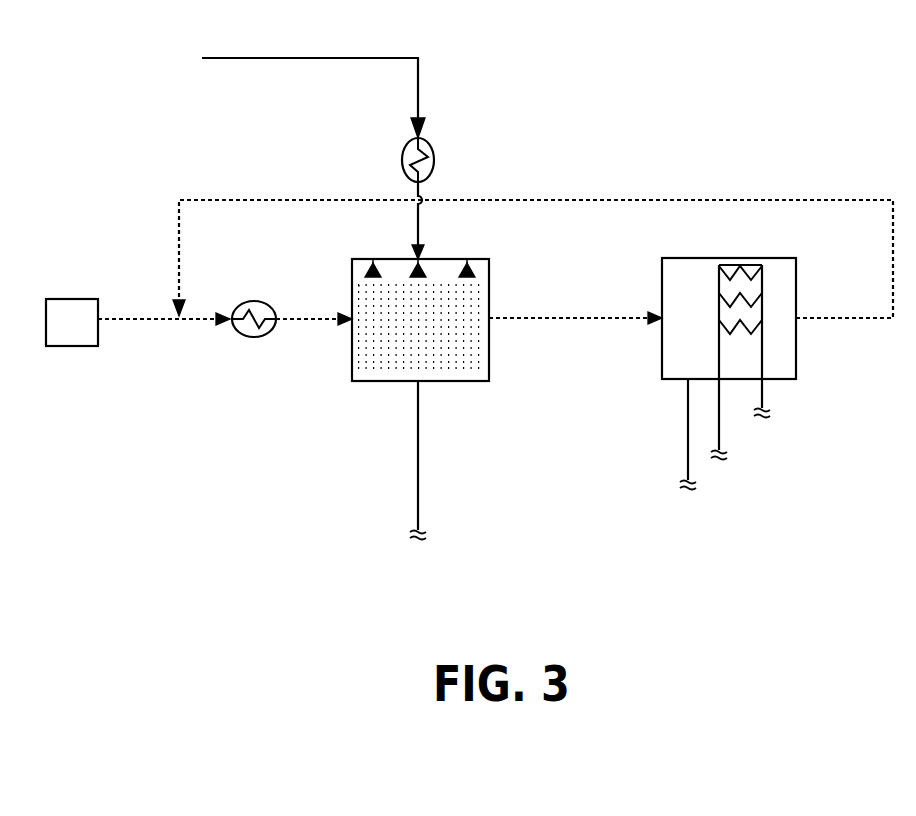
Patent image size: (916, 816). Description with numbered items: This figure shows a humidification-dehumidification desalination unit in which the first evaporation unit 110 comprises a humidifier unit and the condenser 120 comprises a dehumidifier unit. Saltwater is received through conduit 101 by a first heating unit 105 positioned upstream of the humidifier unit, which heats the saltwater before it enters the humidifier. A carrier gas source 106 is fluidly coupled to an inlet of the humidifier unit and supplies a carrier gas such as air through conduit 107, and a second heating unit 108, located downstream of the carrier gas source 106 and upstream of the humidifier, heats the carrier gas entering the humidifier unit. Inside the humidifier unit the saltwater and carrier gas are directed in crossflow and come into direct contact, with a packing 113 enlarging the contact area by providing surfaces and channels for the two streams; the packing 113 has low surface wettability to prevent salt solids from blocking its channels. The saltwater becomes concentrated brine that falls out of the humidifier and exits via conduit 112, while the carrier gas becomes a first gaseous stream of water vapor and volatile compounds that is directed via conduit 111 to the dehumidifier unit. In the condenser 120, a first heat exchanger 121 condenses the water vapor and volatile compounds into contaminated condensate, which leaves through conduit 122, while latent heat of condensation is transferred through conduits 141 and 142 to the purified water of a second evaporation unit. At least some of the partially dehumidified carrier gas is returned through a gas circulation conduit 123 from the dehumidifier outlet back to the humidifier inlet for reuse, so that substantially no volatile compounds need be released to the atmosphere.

The conduit 101 is at (284, 58).
The first heating unit 105 is at (403, 148).
The carrier gas source 106 is at (72, 322).
The conduit 107 is at (135, 320).
The second heating unit 108 is at (256, 338).
The first evaporation unit 110 is at (352, 259).
The packing 113 is at (421, 326).
The conduit 111 is at (558, 320).
The condenser 120 is at (662, 258).
The first heat exchanger 121 is at (759, 364).
The conduit 122 is at (688, 431).
The conduit 141 is at (719, 433).
The conduit 142 is at (762, 392).
The conduit 112 is at (418, 457).
The gas circulation conduit 123 is at (726, 200).